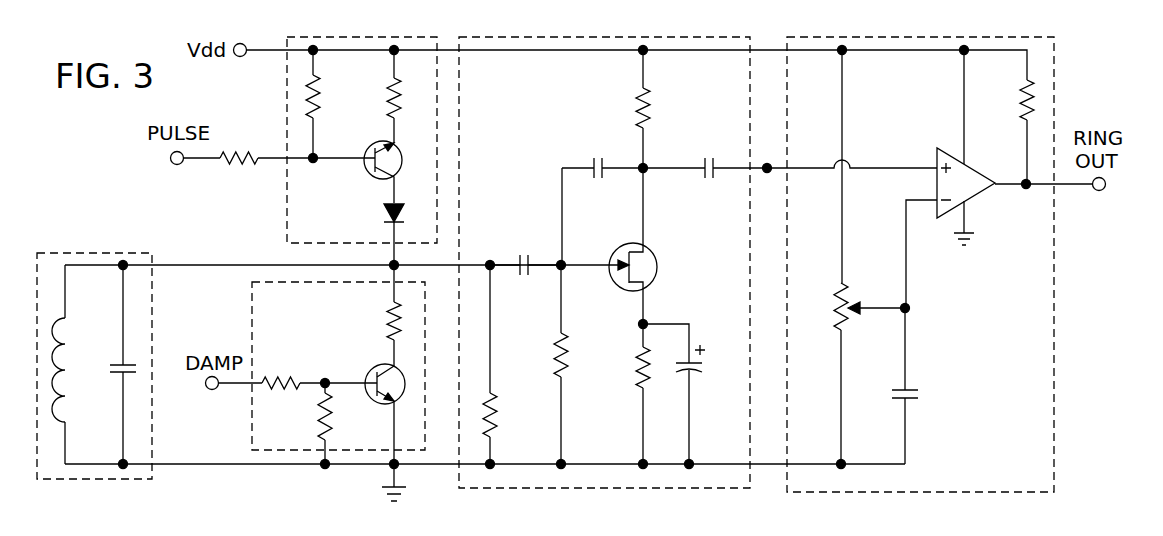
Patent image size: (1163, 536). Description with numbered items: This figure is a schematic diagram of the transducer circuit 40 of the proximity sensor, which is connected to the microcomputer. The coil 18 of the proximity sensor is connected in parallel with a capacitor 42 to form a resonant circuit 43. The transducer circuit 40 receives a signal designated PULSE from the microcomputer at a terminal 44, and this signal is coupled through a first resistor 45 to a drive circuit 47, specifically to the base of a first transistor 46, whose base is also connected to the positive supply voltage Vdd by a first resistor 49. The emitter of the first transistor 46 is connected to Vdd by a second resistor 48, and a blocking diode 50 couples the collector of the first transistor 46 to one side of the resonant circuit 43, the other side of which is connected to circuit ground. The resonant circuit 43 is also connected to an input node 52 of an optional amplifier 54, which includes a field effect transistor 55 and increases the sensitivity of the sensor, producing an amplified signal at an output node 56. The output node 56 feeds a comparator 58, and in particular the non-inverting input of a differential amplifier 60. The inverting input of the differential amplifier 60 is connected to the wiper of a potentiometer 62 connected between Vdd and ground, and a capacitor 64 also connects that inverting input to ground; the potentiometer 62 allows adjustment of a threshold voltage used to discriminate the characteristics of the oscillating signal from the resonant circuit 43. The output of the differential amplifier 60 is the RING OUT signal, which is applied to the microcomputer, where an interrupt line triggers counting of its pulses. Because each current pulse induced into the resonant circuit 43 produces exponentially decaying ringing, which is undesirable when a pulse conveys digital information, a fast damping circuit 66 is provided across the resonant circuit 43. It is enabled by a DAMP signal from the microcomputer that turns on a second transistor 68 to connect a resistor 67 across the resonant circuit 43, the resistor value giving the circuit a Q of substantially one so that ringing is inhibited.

The coil 18 is at (70, 342).
The transducer circuit 40 is at (133, 209).
The capacitor 42 is at (117, 375).
The resonant circuit 43 is at (148, 253).
The terminal 44 is at (170, 158).
The first resistor 45 is at (250, 163).
The first transistor 46 is at (368, 178).
The drive circuit 47 is at (284, 104).
The second resistor 48 is at (388, 90).
The first resistor 49 is at (322, 102).
The blocking diode 50 is at (385, 213).
The input node 52 is at (490, 262).
The amplifier 54 is at (463, 108).
The field effect transistor 55 is at (658, 267).
The output node 56 is at (767, 163).
The comparator 58 is at (1052, 410).
The differential amplifier 60 is at (975, 192).
The potentiometer 62 is at (856, 293).
The capacitor 64 is at (910, 387).
The fast damping circuit 66 is at (250, 312).
The resistor 67 is at (389, 325).
The second transistor 68 is at (378, 368).